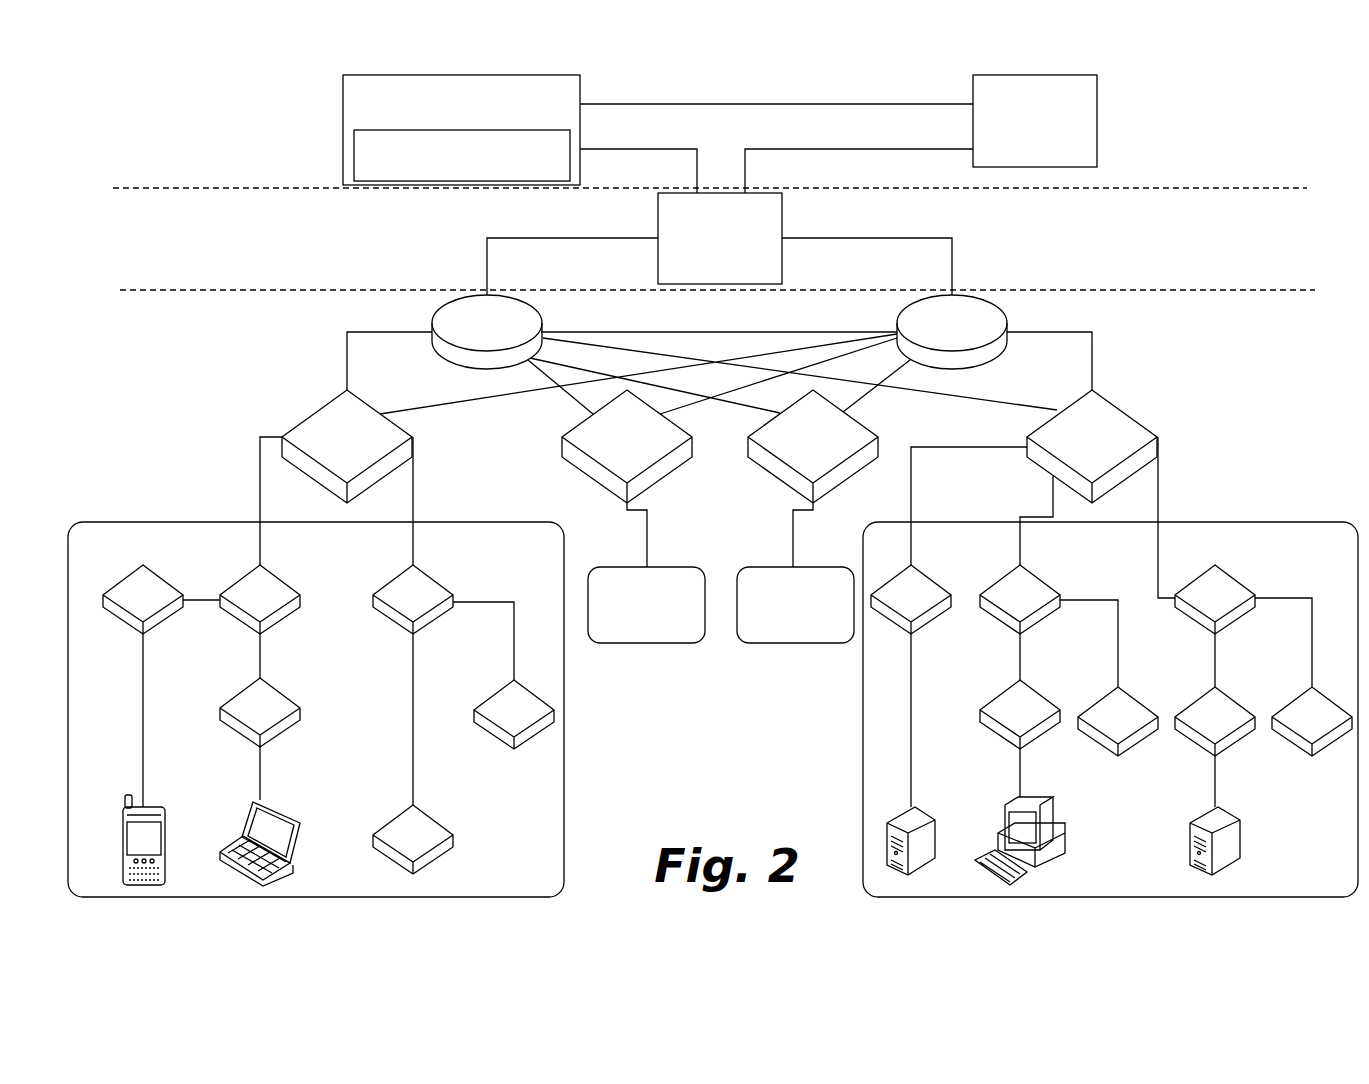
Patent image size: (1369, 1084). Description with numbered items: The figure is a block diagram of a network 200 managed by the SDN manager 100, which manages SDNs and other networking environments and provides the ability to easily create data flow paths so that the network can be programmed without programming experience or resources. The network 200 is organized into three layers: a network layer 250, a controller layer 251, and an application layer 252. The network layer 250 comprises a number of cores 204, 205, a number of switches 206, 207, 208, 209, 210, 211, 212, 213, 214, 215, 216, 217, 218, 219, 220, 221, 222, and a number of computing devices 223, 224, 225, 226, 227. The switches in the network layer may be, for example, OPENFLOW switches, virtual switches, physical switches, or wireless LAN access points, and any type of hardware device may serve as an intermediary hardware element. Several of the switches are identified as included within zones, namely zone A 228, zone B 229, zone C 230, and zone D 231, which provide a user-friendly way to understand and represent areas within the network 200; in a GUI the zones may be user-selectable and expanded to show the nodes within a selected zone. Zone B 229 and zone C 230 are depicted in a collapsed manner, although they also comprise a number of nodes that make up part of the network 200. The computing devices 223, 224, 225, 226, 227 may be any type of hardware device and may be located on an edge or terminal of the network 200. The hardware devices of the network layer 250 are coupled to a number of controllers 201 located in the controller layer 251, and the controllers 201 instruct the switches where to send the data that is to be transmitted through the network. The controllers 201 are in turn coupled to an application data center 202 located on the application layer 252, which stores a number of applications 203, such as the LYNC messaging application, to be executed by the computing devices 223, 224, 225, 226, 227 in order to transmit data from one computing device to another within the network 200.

The SDN manager 100 is at (1035, 121).
The network 200 is at (1244, 148).
The controllers 201 is at (720, 238).
The application data center 202 is at (461, 130).
The applications 203 is at (462, 155).
The core 204 is at (487, 332).
The core 205 is at (952, 332).
The switch 206 is at (347, 446).
The switch 207 is at (627, 446).
The switch 208 is at (813, 446).
The switch 209 is at (1092, 446).
The switch 210 is at (133, 578).
The switch 211 is at (257, 582).
The switch 212 is at (233, 703).
The switch 213 is at (427, 582).
The switch 214 is at (437, 832).
The switch 215 is at (536, 707).
The switch 216 is at (902, 582).
The switch 217 is at (1018, 578).
The switch 218 is at (997, 700).
The switch 219 is at (1125, 703).
The switch 220 is at (1207, 578).
The switch 221 is at (1250, 713).
The switch 222 is at (1293, 702).
The computing device 223 is at (160, 823).
The computing device 224 is at (295, 865).
The computing device 225 is at (1197, 823).
The computing device 226 is at (1020, 825).
The computing device 227 is at (890, 846).
The zone A 228 is at (316, 709).
The zone B 229 is at (646, 605).
The zone C 230 is at (795, 605).
The zone D 231 is at (1110, 709).
The network layer 250 is at (181, 333).
The controller layer 251 is at (181, 229).
The application layer 252 is at (181, 112).